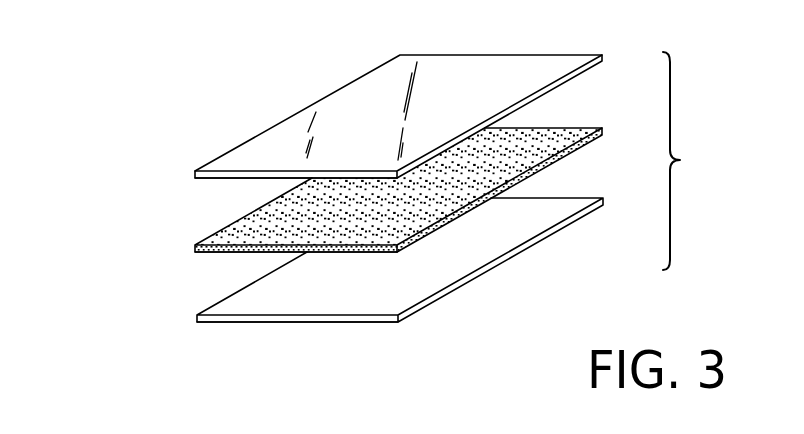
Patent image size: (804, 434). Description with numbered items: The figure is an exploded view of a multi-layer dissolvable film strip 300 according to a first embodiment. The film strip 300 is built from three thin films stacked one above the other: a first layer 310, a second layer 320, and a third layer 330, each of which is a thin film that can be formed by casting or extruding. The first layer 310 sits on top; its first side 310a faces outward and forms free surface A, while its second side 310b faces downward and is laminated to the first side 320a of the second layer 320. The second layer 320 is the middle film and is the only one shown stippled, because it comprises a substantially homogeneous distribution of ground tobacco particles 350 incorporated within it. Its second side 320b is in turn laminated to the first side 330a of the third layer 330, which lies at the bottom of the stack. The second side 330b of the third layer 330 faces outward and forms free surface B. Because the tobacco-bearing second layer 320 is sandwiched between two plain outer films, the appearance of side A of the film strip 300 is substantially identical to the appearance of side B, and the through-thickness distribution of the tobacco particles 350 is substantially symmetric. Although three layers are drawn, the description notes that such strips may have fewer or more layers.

The multi-layer film strip 300 is at (697, 161).
The first layer 310 is at (317, 141).
The first side of first layer 310a is at (242, 150).
The second side of first layer 310b is at (218, 180).
The second layer 320 is at (338, 184).
The first side of second layer 320a is at (559, 130).
The second side of second layer 320b is at (358, 253).
The third layer 330 is at (317, 280).
The first side of third layer 330a is at (227, 308).
The second side of third layer 330b is at (360, 324).
The ground tobacco particles 350 is at (540, 142).
The free surface A is at (357, 102).
The free surface B is at (267, 323).